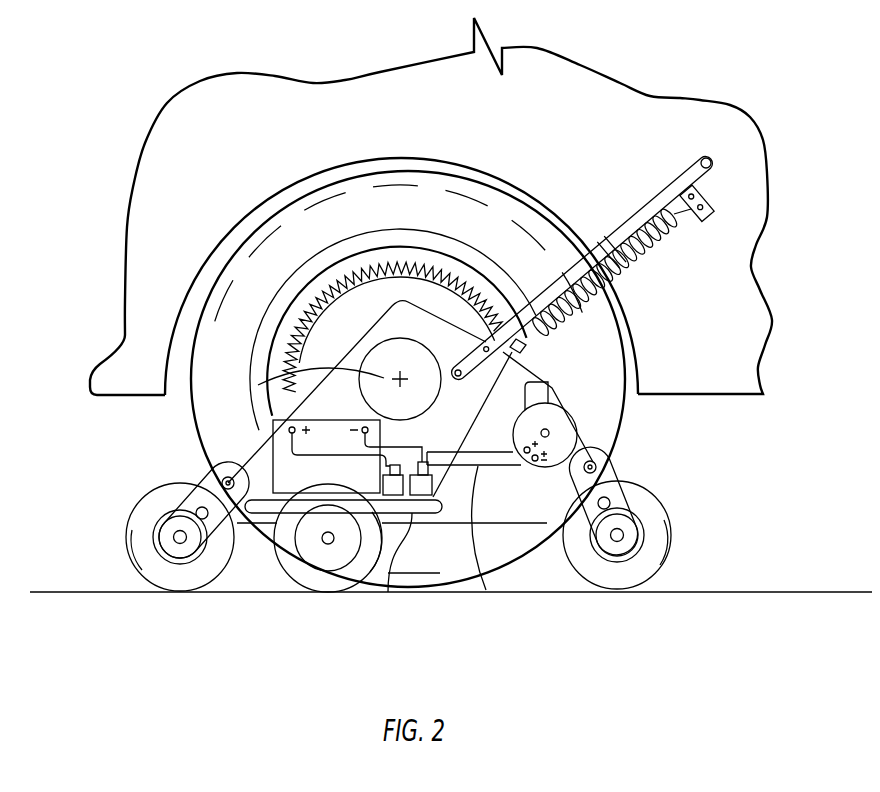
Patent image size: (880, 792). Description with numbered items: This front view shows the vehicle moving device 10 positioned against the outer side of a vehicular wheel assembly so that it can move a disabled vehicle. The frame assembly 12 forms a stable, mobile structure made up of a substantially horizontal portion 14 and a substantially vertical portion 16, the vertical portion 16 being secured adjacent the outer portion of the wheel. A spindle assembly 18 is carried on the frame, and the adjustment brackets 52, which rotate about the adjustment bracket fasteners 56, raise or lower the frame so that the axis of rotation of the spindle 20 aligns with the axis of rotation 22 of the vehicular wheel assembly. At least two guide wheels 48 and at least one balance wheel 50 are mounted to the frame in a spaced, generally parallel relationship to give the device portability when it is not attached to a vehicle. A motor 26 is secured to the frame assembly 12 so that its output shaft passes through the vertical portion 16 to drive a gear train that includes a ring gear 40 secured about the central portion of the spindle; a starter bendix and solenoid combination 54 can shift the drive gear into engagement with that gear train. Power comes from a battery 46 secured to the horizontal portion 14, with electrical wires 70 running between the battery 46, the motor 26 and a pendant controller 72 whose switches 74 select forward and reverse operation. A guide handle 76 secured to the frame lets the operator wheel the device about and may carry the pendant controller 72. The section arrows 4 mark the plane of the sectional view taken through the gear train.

The section line 4- 4 is at (402, 187).
The vehicle moving device 10 is at (678, 453).
The frame assembly 12 is at (606, 432).
The horizontal portion 14 is at (406, 566).
The vertical portion 16 is at (392, 500).
The spindle assembly 18 is at (262, 383).
The spindle 20 is at (434, 396).
The axis of rotation 22 is at (405, 379).
The motor 26 is at (565, 410).
The ring gear 40 is at (490, 290).
The battery 46 is at (352, 457).
The guide wheels 48 is at (183, 589).
The balance wheel 50 is at (307, 577).
The adjustment brackets 52 is at (218, 488).
The starter bendix and solenoid combination 54 is at (525, 390).
The adjustment bracket fasteners 56 is at (223, 477).
The electrical wires 70 is at (495, 538).
The pendant controller 72 is at (716, 210).
The switches 74 is at (712, 167).
The guide handle 76 is at (647, 215).